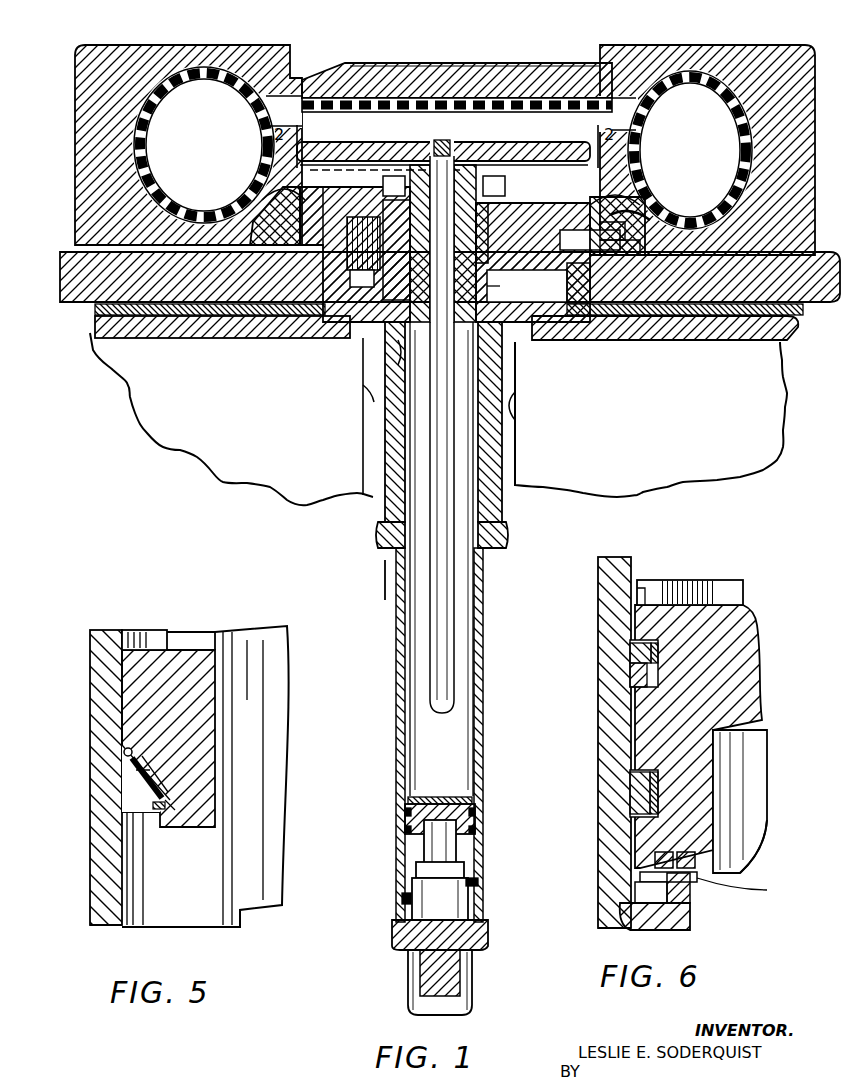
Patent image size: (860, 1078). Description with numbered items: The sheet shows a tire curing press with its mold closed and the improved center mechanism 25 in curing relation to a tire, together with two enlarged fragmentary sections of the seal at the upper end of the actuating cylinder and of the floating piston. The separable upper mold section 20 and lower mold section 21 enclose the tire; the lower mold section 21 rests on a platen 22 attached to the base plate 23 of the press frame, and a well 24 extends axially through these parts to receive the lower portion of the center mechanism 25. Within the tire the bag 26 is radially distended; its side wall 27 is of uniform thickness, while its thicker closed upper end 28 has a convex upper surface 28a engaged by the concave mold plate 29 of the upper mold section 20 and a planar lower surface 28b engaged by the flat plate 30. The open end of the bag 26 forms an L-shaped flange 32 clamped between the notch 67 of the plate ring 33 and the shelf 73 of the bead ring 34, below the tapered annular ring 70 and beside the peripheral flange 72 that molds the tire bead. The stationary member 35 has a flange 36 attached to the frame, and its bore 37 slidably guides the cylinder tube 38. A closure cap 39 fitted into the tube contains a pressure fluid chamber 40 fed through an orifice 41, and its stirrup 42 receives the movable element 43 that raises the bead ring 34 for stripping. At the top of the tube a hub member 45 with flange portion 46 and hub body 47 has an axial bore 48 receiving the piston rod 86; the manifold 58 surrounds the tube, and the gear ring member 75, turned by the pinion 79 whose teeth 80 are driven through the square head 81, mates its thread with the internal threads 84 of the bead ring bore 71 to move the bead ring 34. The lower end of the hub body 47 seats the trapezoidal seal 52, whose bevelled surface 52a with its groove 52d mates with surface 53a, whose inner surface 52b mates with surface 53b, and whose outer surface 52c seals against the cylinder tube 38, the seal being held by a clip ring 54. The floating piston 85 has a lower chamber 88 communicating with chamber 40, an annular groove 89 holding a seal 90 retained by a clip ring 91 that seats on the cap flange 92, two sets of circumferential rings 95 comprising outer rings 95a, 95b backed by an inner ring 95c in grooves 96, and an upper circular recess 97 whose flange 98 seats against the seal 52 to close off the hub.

In FIG. 1, the upper mold section 20 is at (735, 52).
In FIG. 1, the lower mold section 21 is at (758, 256).
In FIG. 1, the platen 22 is at (722, 312).
In FIG. 1, the base plate 23 is at (787, 393).
In FIG. 1, the well 24 is at (516, 448).
In FIG. 1, the center mechanism 25 is at (388, 576).
In FIG. 1, the bag 26 is at (178, 180).
In FIG. 1, the side wall 27 is at (135, 104).
In FIG. 1, the upper end 28 is at (502, 100).
In FIG. 1, the convex upper surface 28a is at (398, 100).
In FIG. 1, the planar lower surface 28b is at (378, 114).
In FIG. 1, the concave mold plate 29 is at (476, 62).
In FIG. 1, the flat plate 30 is at (470, 146).
In FIG. 1, the flange 32 is at (295, 186).
In FIG. 1, the plate ring 33 is at (328, 196).
In FIG. 1, the bead ring 34 is at (256, 232).
In FIG. 1, the stationary member 35 is at (363, 385).
In FIG. 1, the flange 36 is at (320, 337).
In FIG. 1, the bore 37 is at (502, 527).
In FIG. 5, the bore 37 is at (91, 662).
In FIG. 6, the bore 37 is at (600, 600).
In FIG. 1, the cylinder tube 38 is at (484, 702).
In FIG. 5, the cylinder tube 38 is at (96, 921).
In FIG. 6, the cylinder tube 38 is at (610, 816).
In FIG. 1, the closure cap 39 is at (488, 936).
In FIG. 6, the closure cap 39 is at (700, 906).
In FIG. 1, the pressure fluid chamber 40 is at (412, 895).
In FIG. 6, the pressure fluid chamber 40 is at (705, 892).
In FIG. 1, the orifice 41 is at (400, 905).
In FIG. 1, the stirrup 42 is at (470, 1010).
In FIG. 1, the movable element 43 is at (460, 975).
In FIG. 1, the hub member 45 is at (494, 186).
In FIG. 1, the flange portion 46 is at (390, 184).
In FIG. 5, the hub body 47 is at (140, 662).
In FIG. 1, the axial bore 48 is at (482, 288).
In FIG. 5, the axial bore 48 is at (216, 706).
In FIG. 1, the trapezoidal seal 52 is at (400, 355).
In FIG. 5, the trapezoidal seal 52 is at (132, 800).
In FIG. 5, the bevelled surface 52a is at (124, 752).
In FIG. 5, the inner surface 52b is at (176, 770).
In FIG. 5, the outer surface 52c is at (142, 792).
In FIG. 5, the groove 52d is at (140, 772).
In FIG. 5, the surface 53a is at (160, 778).
In FIG. 5, the surface 53b is at (172, 812).
In FIG. 5, the clip ring 54 is at (158, 830).
In FIG. 1, the pressure fluid manifold 58 is at (528, 262).
In FIG. 1, the notch 67 is at (620, 246).
In FIG. 1, the annular ring 70 is at (572, 262).
In FIG. 1, the axial bore 71 is at (350, 250).
In FIG. 1, the peripheral flange 72 is at (626, 212).
In FIG. 1, the shelf 73 is at (616, 220).
In FIG. 1, the ring member 75 is at (372, 262).
In FIG. 1, the pinion 79 is at (272, 334).
In FIG. 1, the teeth 80 is at (362, 278).
In FIG. 1, the square head 81 is at (355, 330).
In FIG. 1, the internal threads 84 is at (566, 262).
In FIG. 1, the floating piston 85 is at (405, 830).
In FIG. 6, the floating piston 85 is at (760, 630).
In FIG. 1, the piston rod 86 is at (452, 626).
In FIG. 1, the chamber 88 is at (458, 856).
In FIG. 6, the chamber 88 is at (755, 800).
In FIG. 6, the annular groove 89 is at (746, 872).
In FIG. 1, the seal 90 is at (416, 866).
In FIG. 6, the seal 90 is at (695, 856).
In FIG. 6, the clip ring 91 is at (660, 880).
In FIG. 1, the annular flange 92 is at (478, 881).
In FIG. 6, the annular flange 92 is at (665, 888).
In FIG. 1, the circumferential rings 95 is at (478, 836).
In FIG. 6, the circumferential rings 95 is at (628, 656).
In FIG. 6, the upper outer ring 95a is at (629, 652).
In FIG. 6, the lower outer ring 95b is at (629, 672).
In FIG. 6, the inner ring 95c is at (634, 684).
In FIG. 6, the groove 96 is at (631, 656).
In FIG. 1, the circular recess 97 is at (472, 800).
In FIG. 6, the circular recess 97 is at (712, 582).
In FIG. 6, the flange 98 is at (645, 582).